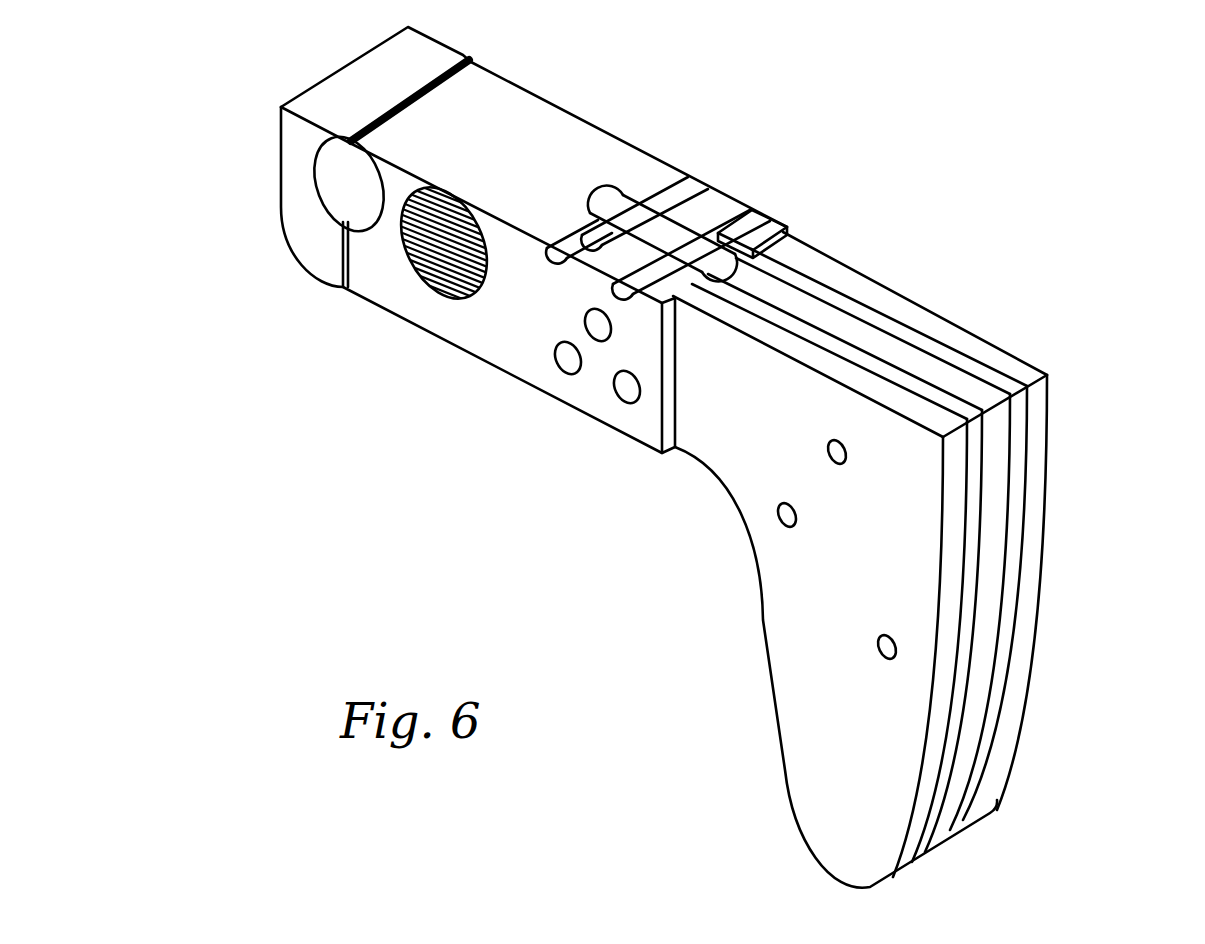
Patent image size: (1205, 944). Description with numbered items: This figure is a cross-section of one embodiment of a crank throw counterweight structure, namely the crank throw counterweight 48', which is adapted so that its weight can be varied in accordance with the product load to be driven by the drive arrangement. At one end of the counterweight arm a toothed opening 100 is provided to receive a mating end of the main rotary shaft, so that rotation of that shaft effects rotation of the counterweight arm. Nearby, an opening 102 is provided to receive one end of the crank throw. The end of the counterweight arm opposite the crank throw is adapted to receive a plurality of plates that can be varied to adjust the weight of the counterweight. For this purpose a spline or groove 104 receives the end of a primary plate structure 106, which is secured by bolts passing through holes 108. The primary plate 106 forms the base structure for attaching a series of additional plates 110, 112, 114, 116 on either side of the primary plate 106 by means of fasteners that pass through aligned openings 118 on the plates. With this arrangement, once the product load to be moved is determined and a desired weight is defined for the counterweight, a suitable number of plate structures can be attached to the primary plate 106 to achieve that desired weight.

The crank throw counterweight 48' is at (534, 240).
The toothed opening 100 is at (435, 254).
The opening 102 is at (347, 185).
The spline or groove 104 is at (703, 197).
The primary plate structure 106 is at (1003, 460).
The holes 108 is at (658, 195).
The additional plate 110 is at (790, 343).
The additional plate 112 is at (920, 392).
The additional plate 114 is at (1013, 595).
The additional plate 116 is at (1003, 750).
The aligned openings 118 is at (600, 340).